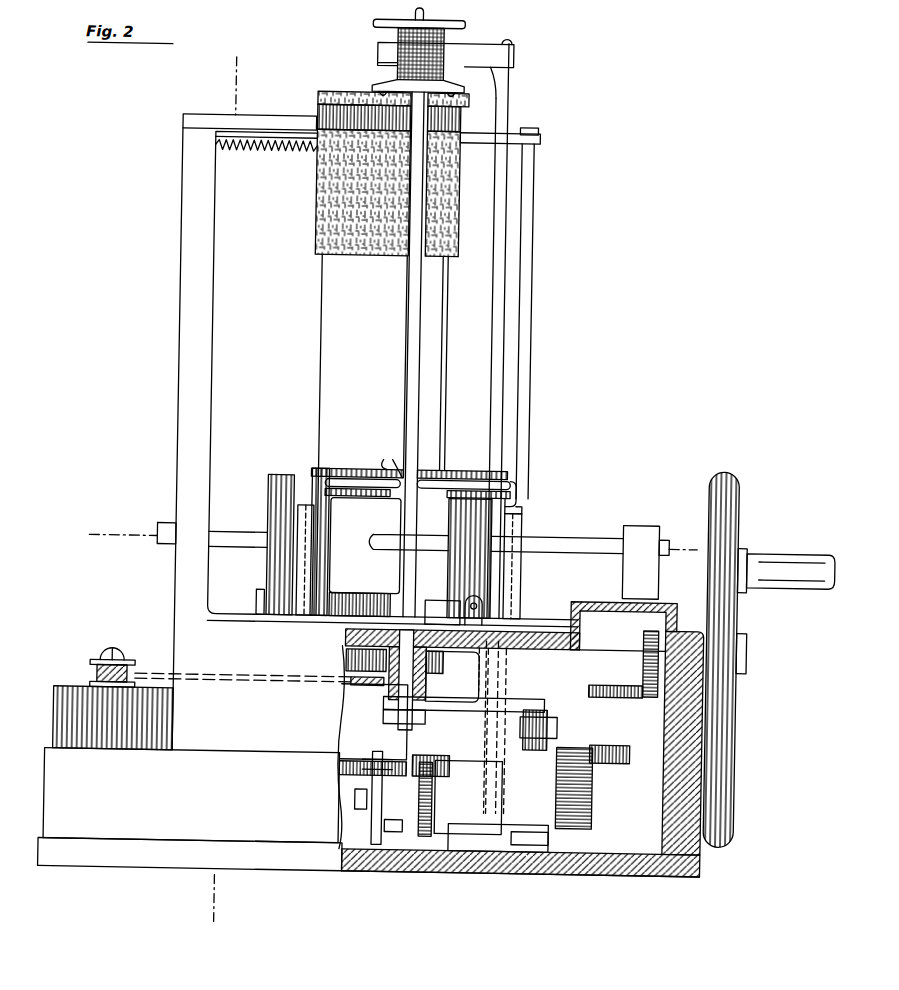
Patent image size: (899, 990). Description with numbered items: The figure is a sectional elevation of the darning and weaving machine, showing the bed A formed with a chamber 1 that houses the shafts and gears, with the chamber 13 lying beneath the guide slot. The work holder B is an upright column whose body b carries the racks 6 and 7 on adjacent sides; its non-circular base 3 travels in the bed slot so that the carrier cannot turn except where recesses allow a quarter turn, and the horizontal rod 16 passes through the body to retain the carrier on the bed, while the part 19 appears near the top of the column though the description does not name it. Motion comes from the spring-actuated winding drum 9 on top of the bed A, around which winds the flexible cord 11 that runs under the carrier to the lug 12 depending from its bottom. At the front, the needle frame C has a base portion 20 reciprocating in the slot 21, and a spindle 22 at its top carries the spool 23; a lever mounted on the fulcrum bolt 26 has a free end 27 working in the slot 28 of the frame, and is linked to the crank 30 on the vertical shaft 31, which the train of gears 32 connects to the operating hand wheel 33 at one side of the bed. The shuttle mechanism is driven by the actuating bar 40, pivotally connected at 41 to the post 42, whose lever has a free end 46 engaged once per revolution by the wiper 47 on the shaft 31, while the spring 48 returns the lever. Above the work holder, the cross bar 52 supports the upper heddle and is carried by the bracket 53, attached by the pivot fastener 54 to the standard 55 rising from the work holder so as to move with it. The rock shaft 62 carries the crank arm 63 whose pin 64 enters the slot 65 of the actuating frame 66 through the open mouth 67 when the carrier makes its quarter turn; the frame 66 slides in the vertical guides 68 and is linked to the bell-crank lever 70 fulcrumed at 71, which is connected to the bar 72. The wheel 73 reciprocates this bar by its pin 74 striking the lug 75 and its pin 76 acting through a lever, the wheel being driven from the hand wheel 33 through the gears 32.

The chamber 1 is at (443, 882).
The non-circular base 3 is at (440, 668).
The rack 6 is at (440, 604).
The rack 7 is at (347, 594).
The winding drum 9 is at (102, 662).
The flexible element 11 is at (146, 675).
The lug 12 is at (366, 686).
The chamber 13 is at (373, 722).
The horizontal rod 16 is at (412, 557).
The ring 19 is at (456, 124).
The base portion 20 is at (416, 686).
The slot 21 is at (366, 660).
The spindle 22 is at (417, 14).
The spool 23 is at (437, 60).
The fulcrum bolt 26 is at (466, 674).
The free end 27 is at (440, 712).
The slot 28 is at (396, 718).
The crank 30 is at (546, 718).
The vertical shaft 31 is at (546, 707).
The train of gears 32 is at (562, 750).
The operating wheel 33 is at (736, 615).
The actuating bar 40 is at (491, 143).
The pivotal connection 41 is at (534, 130).
The post 42 is at (530, 421).
The free end 46 is at (515, 834).
The wiper 47 is at (540, 847).
The spring 48 is at (262, 156).
The cross bar 52 is at (372, 70).
The bracket 53 is at (474, 67).
The pivot fastener 54 is at (506, 43).
The standard 55 is at (503, 107).
The rock shaft 62 is at (383, 460).
The crank arm 63 is at (395, 460).
The pin 64 is at (417, 504).
The slot 65 is at (445, 479).
The actuating frame 66 is at (523, 506).
The open end 67 is at (518, 486).
The vertical guides 68 is at (300, 563).
The bell-crank lever 70 is at (437, 782).
The fulcrum 71 is at (377, 775).
The bar 72 is at (431, 757).
The wheel 73 is at (367, 800).
The pin 74 is at (395, 832).
The lug 75 is at (362, 830).
The pin 76 is at (399, 761).
The bed A is at (191, 808).
The work holder B is at (313, 376).
The needle frame C is at (420, 369).
The yarn package W is at (312, 214).
The body b is at (365, 546).